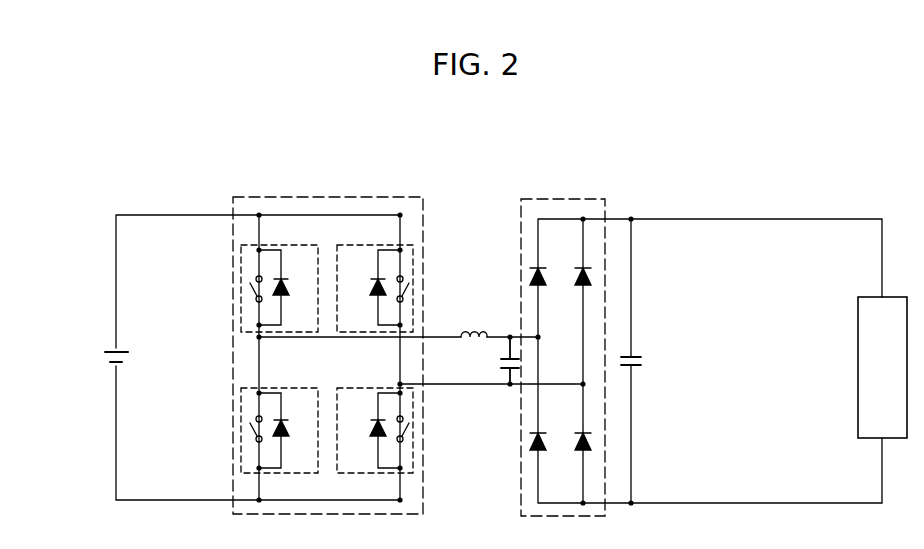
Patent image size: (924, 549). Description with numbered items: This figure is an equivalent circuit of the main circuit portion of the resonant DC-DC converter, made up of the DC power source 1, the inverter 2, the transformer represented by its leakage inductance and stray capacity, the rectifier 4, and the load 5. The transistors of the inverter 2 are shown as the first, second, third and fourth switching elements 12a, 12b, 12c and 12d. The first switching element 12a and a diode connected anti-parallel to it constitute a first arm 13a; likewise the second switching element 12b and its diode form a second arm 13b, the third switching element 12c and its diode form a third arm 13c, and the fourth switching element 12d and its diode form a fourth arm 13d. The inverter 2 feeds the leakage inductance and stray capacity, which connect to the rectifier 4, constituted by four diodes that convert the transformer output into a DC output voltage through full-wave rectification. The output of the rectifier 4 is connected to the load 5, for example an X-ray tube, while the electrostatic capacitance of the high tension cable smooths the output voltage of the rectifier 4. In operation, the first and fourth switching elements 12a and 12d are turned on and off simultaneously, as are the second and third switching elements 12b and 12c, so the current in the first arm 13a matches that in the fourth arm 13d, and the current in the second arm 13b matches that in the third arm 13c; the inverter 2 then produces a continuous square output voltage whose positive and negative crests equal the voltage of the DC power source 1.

The DC power source 1 is at (104, 358).
The inverter 2 is at (357, 197).
The rectifier 4 is at (573, 198).
The load 5 is at (858, 345).
The first switching element 12a is at (250, 295).
The second switching element 12b is at (251, 431).
The third switching element 12c is at (410, 285).
The fourth switching element 12d is at (408, 428).
The first arm 13a is at (245, 282).
The second arm 13b is at (251, 430).
The third arm 13c is at (406, 284).
The fourth arm 13d is at (401, 430).